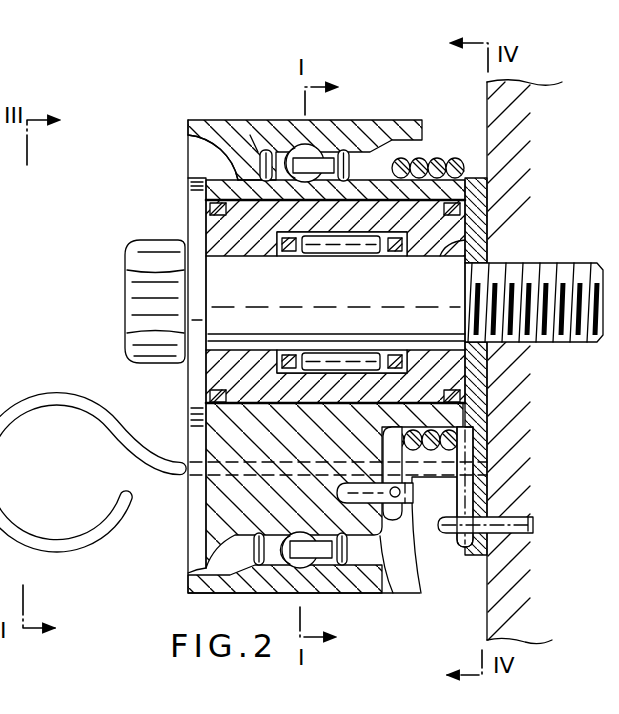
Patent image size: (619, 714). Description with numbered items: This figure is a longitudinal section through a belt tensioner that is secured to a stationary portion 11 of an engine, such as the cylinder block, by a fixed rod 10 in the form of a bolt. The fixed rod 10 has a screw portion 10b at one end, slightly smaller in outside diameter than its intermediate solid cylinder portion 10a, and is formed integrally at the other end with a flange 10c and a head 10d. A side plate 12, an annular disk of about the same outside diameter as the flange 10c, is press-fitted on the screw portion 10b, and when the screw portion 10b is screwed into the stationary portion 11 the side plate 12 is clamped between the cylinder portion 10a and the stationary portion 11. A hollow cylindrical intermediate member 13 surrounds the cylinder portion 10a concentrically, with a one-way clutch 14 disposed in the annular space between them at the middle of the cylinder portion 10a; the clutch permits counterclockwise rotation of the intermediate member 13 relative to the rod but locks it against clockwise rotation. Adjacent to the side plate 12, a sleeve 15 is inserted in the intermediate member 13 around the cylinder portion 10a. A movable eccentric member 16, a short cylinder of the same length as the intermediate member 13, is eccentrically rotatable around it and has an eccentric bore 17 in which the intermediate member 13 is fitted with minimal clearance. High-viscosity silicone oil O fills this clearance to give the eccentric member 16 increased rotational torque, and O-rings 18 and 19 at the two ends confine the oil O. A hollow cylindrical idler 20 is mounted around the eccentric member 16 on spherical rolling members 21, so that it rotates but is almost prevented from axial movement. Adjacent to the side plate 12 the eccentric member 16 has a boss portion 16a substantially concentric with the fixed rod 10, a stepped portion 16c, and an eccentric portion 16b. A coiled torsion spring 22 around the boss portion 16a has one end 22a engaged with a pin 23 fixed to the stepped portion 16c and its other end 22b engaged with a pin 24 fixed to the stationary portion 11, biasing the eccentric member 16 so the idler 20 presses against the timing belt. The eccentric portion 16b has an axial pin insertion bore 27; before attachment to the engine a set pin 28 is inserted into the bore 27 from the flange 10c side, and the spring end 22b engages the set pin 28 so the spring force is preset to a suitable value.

The fixed rod 10 is at (126, 253).
The intermediate solid cylinder portion 10a is at (449, 246).
The screw portion 10b is at (575, 344).
The flange 10c is at (192, 184).
The head 10d is at (134, 313).
The stationary portion 11 is at (487, 108).
The side plate 12 is at (478, 190).
The intermediate member 13 is at (214, 241).
The one-way clutch 14 is at (343, 262).
The sleeve 15 is at (452, 367).
The movable eccentric member 16 is at (202, 533).
The boss portion 16a is at (463, 432).
The eccentric portion 16b is at (185, 565).
The stepped portion 16c is at (393, 545).
The eccentric bore 17 is at (216, 390).
The O-ring 18 is at (468, 210).
The O-ring 19 is at (211, 210).
The idler 20 is at (226, 128).
The spherical rolling members 21 is at (300, 147).
The coiled torsion spring 22 is at (437, 158).
The spring end 22a is at (423, 545).
The spring end 22b is at (468, 545).
The pin 23 is at (418, 486).
The pin 24 is at (533, 524).
The pin insertion bore 27 is at (177, 478).
The set pin 28 is at (72, 546).
The silicone oil O is at (203, 145).